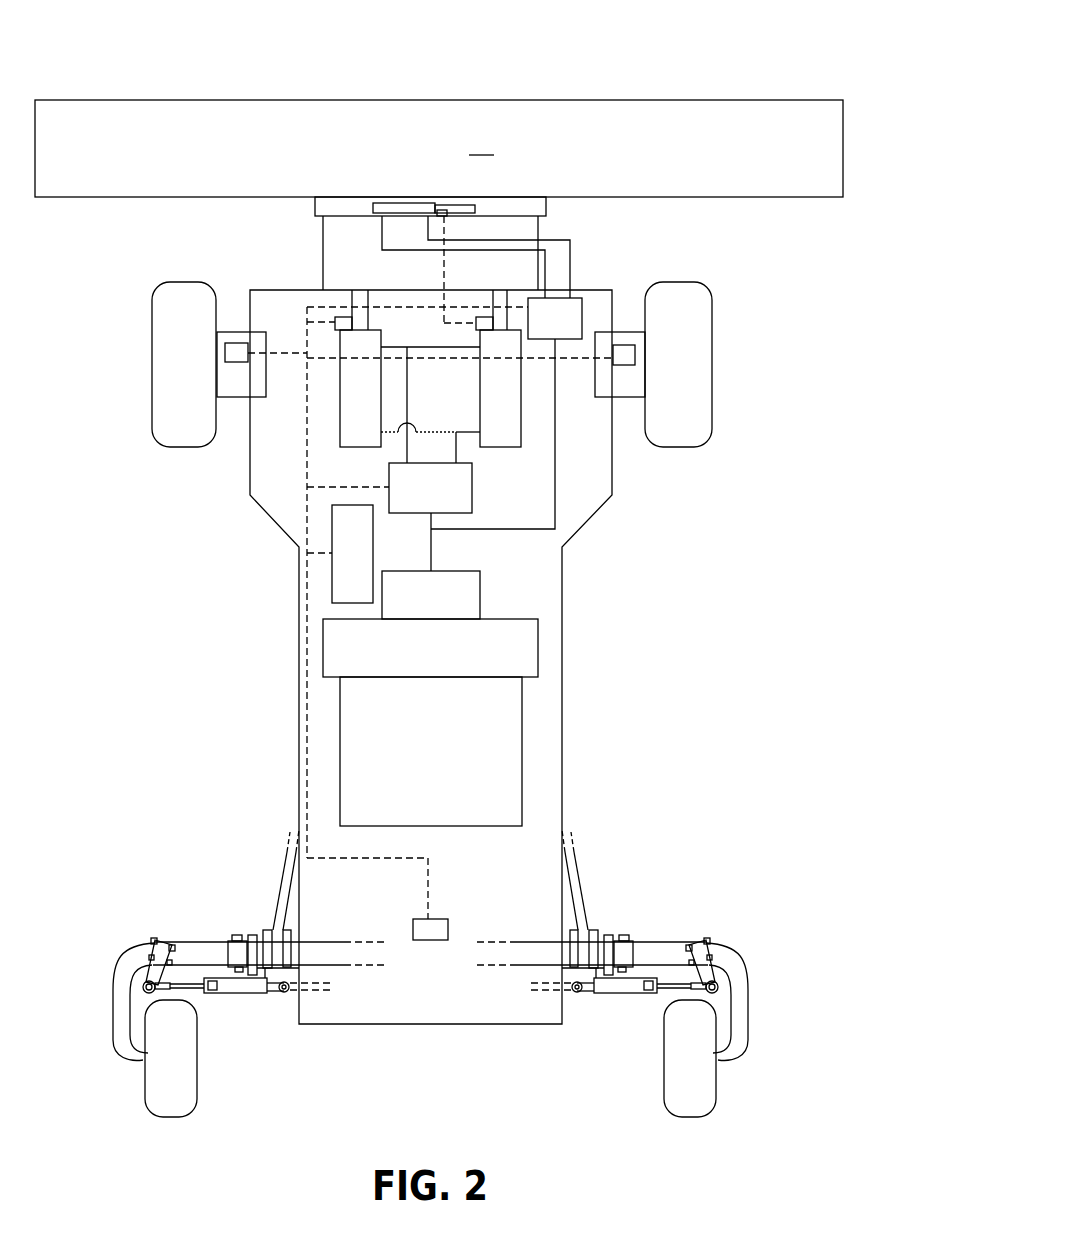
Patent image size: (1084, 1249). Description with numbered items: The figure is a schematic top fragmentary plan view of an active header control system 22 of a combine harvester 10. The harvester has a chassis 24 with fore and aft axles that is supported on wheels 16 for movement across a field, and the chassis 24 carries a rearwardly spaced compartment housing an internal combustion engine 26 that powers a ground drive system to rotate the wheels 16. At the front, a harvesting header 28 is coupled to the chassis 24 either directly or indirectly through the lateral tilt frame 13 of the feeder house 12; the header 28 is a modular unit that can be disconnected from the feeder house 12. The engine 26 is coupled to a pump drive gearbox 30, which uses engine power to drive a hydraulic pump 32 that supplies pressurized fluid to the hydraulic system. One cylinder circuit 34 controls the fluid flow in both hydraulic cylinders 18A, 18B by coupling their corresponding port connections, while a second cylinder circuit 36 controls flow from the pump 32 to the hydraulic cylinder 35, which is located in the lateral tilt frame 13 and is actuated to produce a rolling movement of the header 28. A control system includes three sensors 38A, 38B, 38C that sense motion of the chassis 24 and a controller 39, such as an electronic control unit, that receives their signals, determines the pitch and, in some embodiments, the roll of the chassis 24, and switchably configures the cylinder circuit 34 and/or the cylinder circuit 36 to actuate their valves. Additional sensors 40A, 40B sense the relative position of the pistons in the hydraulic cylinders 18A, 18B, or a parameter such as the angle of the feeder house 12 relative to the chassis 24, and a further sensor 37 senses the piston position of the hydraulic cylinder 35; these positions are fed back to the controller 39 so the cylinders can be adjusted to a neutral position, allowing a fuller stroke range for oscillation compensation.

The combine harvester 10 is at (697, 66).
The feeder house 12 is at (411, 283).
The lateral tilt frame 13 is at (546, 206).
The wheels 16 is at (710, 364).
The hydraulic cylinder 18A is at (380, 395).
The hydraulic cylinder 18B is at (520, 395).
The active header control system 22 is at (160, 575).
The chassis 24 is at (562, 645).
The internal combustion engine 26 is at (485, 748).
The harvesting header 28 is at (439, 148).
The pump drive gearbox 30 is at (495, 676).
The hydraulic pump 32 is at (474, 606).
The cylinder circuit 34 is at (417, 498).
The hydraulic cylinder 35 is at (315, 208).
The cylinder circuit 36 is at (542, 329).
The sensor 37 is at (448, 214).
The sensor 38A is at (238, 343).
The sensor 38B is at (623, 344).
The sensor 38C is at (448, 928).
The controller 39 is at (339, 563).
The sensor 40A is at (342, 318).
The sensor 40B is at (477, 327).